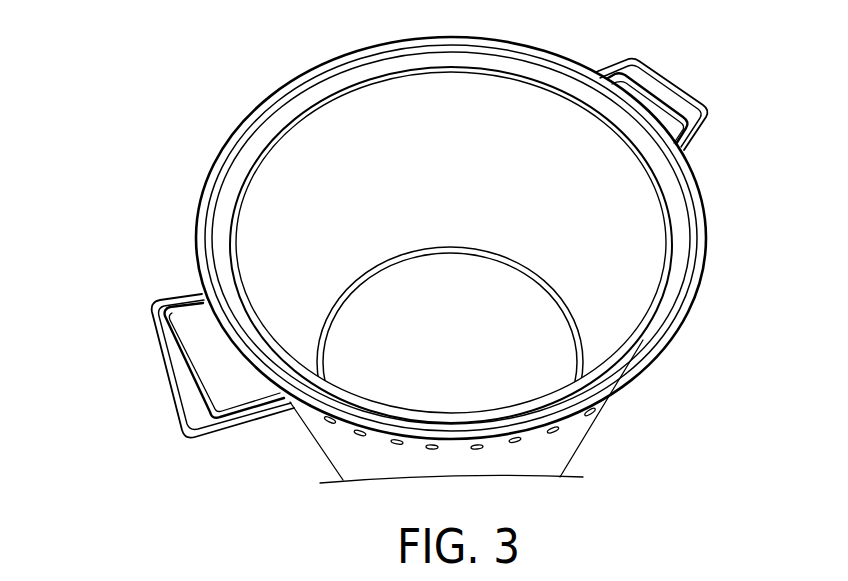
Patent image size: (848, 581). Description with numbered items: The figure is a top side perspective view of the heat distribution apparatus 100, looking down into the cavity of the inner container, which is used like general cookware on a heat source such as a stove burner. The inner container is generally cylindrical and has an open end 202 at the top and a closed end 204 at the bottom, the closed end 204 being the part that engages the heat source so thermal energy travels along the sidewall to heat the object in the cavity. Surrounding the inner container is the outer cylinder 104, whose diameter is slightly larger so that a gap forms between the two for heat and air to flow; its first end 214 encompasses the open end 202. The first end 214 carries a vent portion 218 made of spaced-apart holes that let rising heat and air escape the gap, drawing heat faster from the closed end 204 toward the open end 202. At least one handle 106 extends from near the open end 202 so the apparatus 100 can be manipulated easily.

The heat distribution apparatus 100 is at (70, 108).
The outer cylinder 104 is at (347, 461).
The handle 106 is at (697, 99).
The open end 202 is at (677, 213).
The closed end 204 is at (380, 308).
The first end 214 is at (705, 263).
The vent portion 218 is at (484, 448).